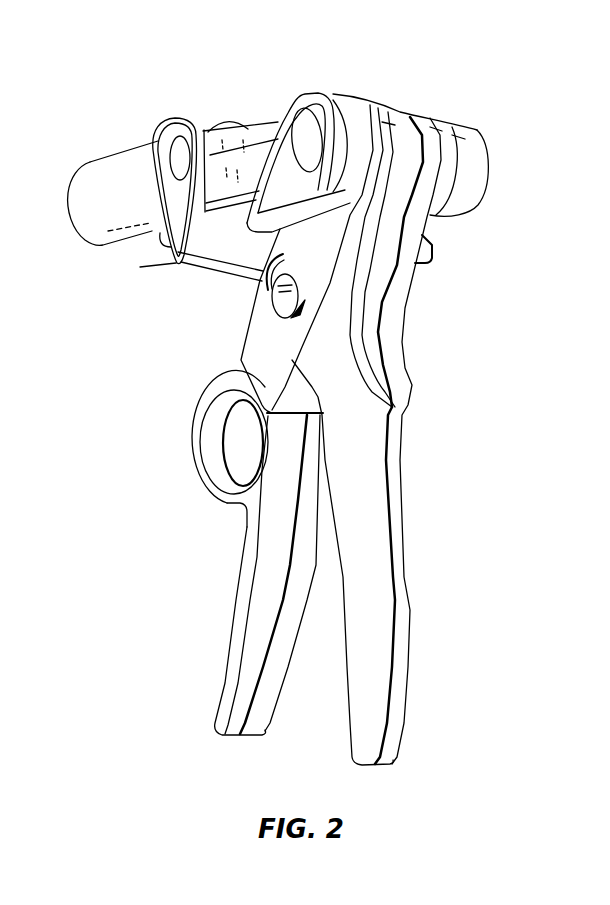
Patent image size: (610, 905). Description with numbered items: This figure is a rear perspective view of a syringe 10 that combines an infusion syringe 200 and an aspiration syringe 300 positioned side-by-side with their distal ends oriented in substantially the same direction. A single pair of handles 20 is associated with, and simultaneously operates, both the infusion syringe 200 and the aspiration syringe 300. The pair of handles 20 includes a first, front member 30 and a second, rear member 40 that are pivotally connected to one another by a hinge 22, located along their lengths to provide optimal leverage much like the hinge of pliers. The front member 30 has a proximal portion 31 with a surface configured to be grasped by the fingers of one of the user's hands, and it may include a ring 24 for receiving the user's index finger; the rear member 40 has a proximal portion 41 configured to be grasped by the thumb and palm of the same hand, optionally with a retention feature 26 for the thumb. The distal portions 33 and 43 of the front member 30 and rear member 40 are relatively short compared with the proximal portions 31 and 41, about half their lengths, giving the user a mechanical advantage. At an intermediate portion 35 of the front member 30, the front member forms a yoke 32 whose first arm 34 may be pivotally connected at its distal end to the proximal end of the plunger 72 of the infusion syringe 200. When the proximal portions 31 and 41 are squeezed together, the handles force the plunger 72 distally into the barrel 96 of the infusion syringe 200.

The syringe 10 is at (525, 124).
The pair of handles 20 is at (420, 432).
The hinge 22 is at (284, 299).
The ring 24 is at (213, 430).
The retention feature 26 is at (400, 368).
The front member 30 is at (243, 593).
The proximal portion 31 is at (263, 615).
The yoke 32 is at (277, 417).
The distal portion 33 is at (244, 290).
The first arm 34 is at (318, 258).
The intermediate portion 35 is at (252, 330).
The rear member 40 is at (403, 620).
The proximal portion 41 is at (380, 660).
The distal portion 43 is at (410, 130).
The plunger 72 is at (245, 123).
The barrel 96 is at (115, 213).
The infusion syringe 200 is at (145, 130).
The aspiration syringe 300 is at (448, 250).